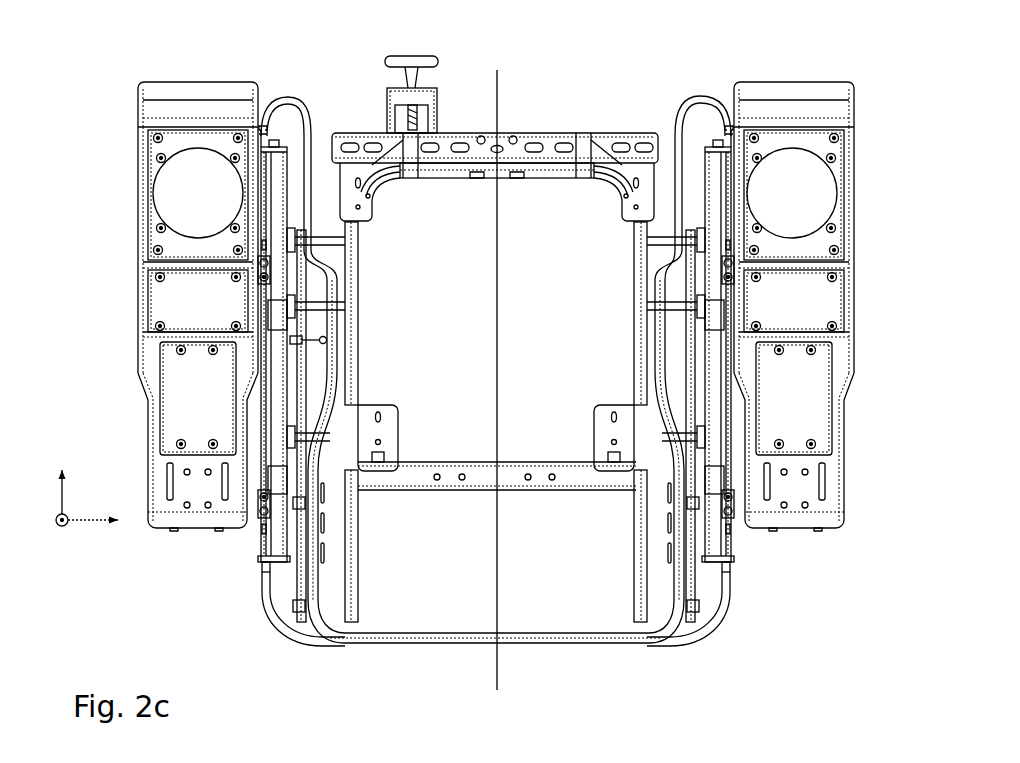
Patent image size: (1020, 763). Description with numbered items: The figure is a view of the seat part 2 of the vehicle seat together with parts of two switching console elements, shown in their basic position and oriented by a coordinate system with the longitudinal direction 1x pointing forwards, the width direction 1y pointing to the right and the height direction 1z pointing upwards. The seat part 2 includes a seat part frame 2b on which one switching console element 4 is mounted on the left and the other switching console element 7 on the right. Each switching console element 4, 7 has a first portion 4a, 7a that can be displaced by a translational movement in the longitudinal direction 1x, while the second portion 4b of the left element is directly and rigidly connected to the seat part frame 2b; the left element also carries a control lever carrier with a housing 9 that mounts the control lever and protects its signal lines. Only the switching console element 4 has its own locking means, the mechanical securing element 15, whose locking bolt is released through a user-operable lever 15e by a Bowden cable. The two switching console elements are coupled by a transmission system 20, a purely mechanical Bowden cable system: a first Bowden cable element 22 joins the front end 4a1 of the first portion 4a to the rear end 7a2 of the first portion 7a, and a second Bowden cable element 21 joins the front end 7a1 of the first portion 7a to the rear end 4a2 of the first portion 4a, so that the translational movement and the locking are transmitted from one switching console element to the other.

The seat part 2 is at (441, 648).
The seat part frame 2b is at (547, 143).
The switching console element 4 is at (180, 318).
The first portion 4a is at (203, 536).
The front end 4a1 is at (263, 92).
The rear end 4a2 is at (248, 536).
The second portion 4b is at (289, 137).
The switching console element 7 is at (798, 321).
The first portion 7a is at (816, 551).
The front end 7a1 is at (722, 88).
The rear end 7a2 is at (737, 536).
The housing 9 is at (157, 173).
The mechanical securing element 15 is at (308, 375).
The lever 15e is at (419, 51).
The transmission system 20 is at (403, 701).
The second Bowden cable element 21 is at (280, 618).
The first Bowden cable element 22 is at (715, 617).
The longitudinal direction 1x is at (60, 492).
The width direction 1y is at (93, 501).
The height direction 1z is at (58, 528).